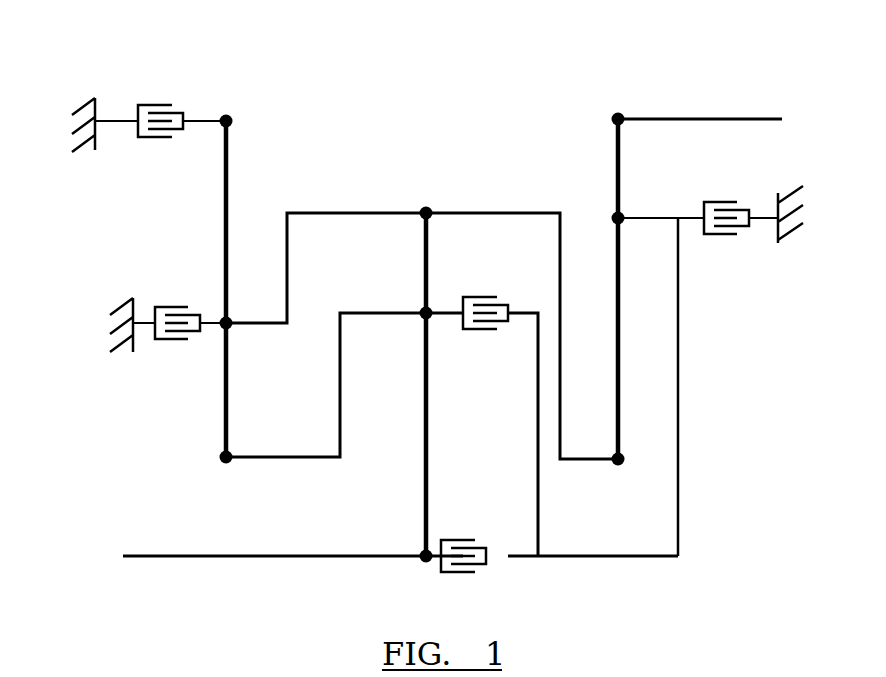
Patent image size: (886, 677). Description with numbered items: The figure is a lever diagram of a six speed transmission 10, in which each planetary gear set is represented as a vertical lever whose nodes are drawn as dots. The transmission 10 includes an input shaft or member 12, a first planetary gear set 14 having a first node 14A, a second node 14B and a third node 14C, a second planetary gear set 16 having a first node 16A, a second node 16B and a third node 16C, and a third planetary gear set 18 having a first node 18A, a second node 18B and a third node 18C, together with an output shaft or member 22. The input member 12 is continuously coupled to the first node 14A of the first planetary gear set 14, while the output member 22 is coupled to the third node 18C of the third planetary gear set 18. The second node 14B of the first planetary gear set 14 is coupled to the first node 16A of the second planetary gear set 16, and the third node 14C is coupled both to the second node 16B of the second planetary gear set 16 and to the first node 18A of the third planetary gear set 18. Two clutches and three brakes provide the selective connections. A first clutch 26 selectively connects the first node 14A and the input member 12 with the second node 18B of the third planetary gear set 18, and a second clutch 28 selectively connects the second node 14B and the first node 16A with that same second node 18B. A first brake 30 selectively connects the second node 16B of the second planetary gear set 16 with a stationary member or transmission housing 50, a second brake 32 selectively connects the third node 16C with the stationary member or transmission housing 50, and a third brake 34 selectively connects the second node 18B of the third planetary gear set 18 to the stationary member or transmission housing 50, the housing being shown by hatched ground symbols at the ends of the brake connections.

The transmission 10 is at (580, 67).
The input shaft or member 12 is at (187, 555).
The first planetary gear set 14 is at (436, 454).
The first node of the first planetary gear set 14A is at (420, 554).
The second node of the first planetary gear set 14B is at (418, 311).
The third node of the first planetary gear set 14C is at (420, 212).
The second planetary gear set 16 is at (245, 186).
The first node of the second planetary gear set 16A is at (230, 454).
The second node of the second planetary gear set 16B is at (221, 322).
The third node of the second planetary gear set 16C is at (222, 121).
The third planetary gear set 18 is at (594, 203).
The first node of the third planetary gear set 18A is at (624, 463).
The second node of the third planetary gear set 18B is at (622, 224).
The third node of the third planetary gear set 18C is at (622, 123).
The output shaft or member 22 is at (737, 118).
The first clutch 26 is at (482, 537).
The second clutch 28 is at (477, 296).
The first brake 30 is at (171, 342).
The second brake 32 is at (157, 142).
The third brake 34 is at (720, 238).
The stationary member or transmission housing 50 is at (93, 143).